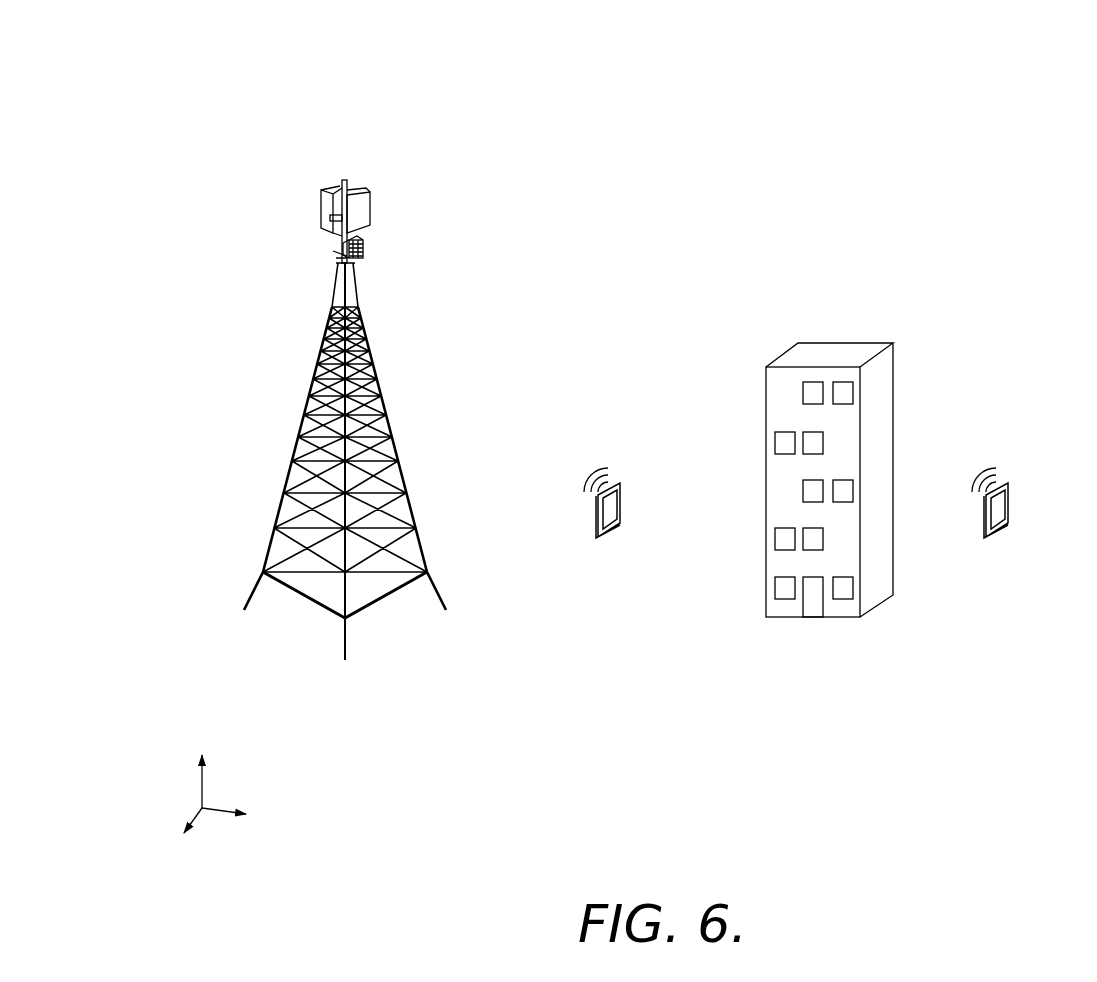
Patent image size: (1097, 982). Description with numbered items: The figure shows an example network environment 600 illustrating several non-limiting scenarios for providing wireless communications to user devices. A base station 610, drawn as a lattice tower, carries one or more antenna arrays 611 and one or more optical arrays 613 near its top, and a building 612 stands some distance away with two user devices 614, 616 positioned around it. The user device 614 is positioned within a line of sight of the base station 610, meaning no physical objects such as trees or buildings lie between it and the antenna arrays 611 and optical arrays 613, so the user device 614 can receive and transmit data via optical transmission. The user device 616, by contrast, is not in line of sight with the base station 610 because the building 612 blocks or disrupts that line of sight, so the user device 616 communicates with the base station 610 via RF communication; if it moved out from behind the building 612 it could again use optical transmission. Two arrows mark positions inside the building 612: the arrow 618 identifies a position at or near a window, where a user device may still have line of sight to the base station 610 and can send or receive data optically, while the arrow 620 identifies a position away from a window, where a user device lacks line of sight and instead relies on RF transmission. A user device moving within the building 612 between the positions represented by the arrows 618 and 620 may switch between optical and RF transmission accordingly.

The network environment 600 is at (93, 97).
The base station 610 is at (293, 202).
The antenna array 611 is at (378, 217).
The optical array 613 is at (368, 242).
The building 612 is at (838, 343).
The user device 614 is at (622, 506).
The user device 616 is at (1010, 506).
The arrow 618 is at (782, 442).
The arrow 620 is at (840, 443).